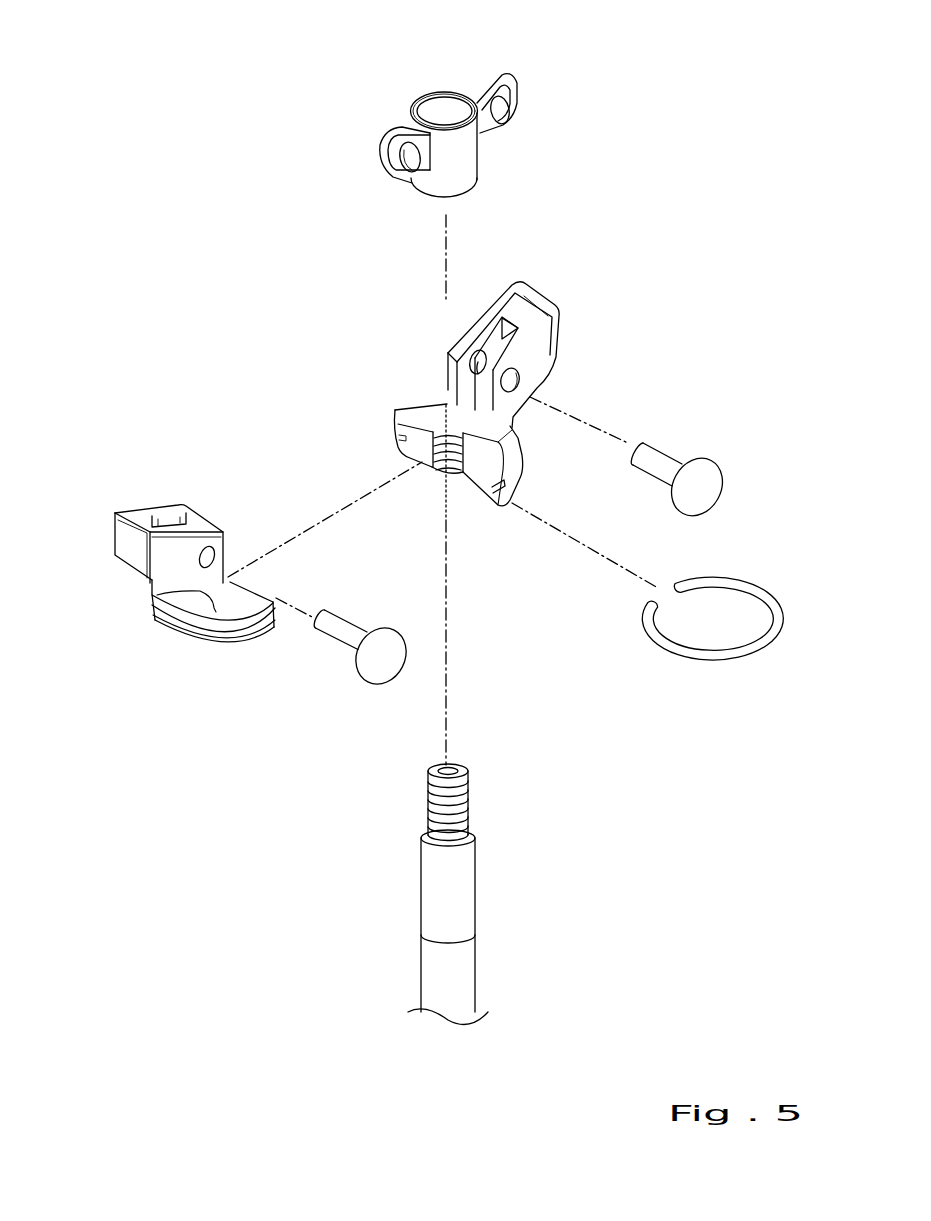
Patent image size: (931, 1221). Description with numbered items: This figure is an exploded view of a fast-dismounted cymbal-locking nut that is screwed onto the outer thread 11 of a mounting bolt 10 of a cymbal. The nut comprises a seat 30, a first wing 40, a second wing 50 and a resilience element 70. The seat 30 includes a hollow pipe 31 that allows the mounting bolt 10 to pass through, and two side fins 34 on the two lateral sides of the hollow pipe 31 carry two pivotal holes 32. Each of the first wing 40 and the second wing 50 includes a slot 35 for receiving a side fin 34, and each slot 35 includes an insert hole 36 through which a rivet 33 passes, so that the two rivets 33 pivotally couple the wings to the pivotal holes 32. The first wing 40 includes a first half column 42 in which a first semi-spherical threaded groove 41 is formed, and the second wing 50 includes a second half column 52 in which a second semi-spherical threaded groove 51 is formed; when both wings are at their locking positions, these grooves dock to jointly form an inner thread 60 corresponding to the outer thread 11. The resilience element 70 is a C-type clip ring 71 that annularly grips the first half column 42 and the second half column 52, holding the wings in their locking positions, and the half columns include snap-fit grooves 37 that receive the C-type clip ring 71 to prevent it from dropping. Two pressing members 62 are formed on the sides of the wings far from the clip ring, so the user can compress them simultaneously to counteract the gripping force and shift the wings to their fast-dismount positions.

The mounting bolt 10 is at (458, 898).
The outer thread 11 is at (462, 802).
The seat 30 is at (441, 128).
The hollow pipe 31 is at (433, 112).
The pivotal hole 32 is at (410, 160).
The rivet 33 is at (340, 638).
The side fin 34 is at (380, 152).
The slot 35 is at (492, 340).
The insert hole 36 is at (518, 380).
The snap-fit groove 37 is at (512, 498).
The first wing 40 is at (182, 589).
The first semi-spherical threaded groove 41 is at (228, 580).
The first half column 42 is at (198, 615).
The second wing 50 is at (369, 463).
The second semi-spherical threaded groove 51 is at (418, 462).
The second half column 52 is at (510, 448).
The inner thread 60 is at (349, 481).
The pressing member 62 is at (546, 321).
The resilience element 70 is at (681, 652).
The C-type clip ring 71 is at (712, 657).